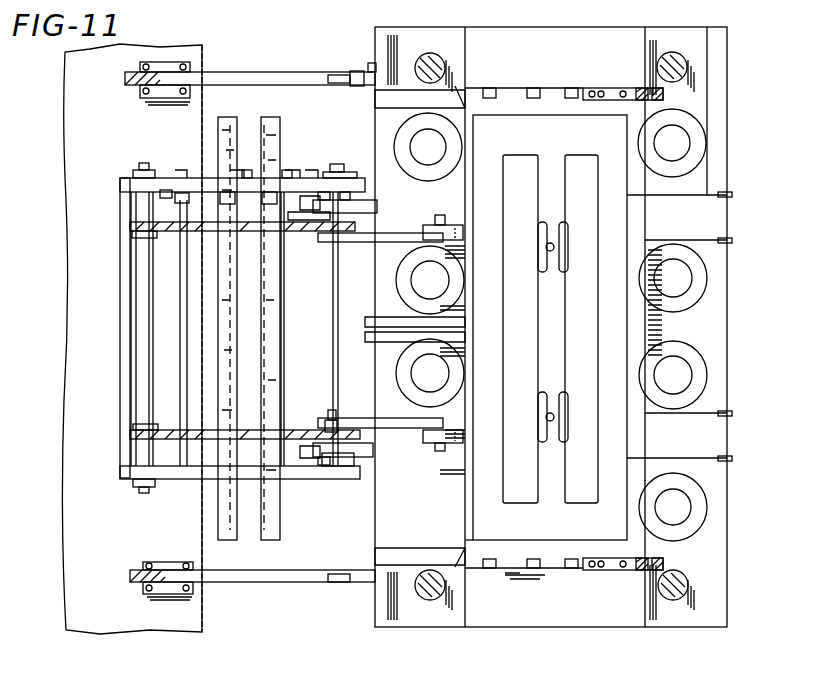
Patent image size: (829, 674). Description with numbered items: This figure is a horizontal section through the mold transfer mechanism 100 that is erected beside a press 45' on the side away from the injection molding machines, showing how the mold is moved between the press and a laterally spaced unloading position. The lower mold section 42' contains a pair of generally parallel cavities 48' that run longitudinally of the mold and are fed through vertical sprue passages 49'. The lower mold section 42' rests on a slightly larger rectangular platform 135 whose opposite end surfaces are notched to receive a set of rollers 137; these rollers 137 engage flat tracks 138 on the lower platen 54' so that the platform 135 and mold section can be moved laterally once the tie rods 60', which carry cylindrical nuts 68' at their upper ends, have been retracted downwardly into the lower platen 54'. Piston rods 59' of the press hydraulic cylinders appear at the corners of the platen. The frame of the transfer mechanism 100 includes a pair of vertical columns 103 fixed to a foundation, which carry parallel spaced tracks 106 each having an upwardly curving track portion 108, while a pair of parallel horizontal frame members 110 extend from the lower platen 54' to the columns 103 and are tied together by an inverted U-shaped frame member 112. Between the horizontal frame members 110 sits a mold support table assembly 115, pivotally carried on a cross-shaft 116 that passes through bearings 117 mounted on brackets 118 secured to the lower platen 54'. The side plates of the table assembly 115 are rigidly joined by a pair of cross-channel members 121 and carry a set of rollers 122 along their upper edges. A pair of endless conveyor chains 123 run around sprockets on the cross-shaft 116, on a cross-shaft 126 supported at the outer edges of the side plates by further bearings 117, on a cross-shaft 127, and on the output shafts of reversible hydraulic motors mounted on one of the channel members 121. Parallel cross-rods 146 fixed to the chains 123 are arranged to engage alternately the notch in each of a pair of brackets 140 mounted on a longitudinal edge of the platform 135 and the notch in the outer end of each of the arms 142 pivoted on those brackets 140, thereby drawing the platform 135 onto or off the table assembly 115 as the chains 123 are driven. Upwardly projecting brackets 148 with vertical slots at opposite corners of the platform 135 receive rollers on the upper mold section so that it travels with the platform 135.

The lower mold section 42' is at (550, 327).
The press 45' is at (585, 327).
The cavities 48' is at (550, 345).
The sprue passages 49' is at (536, 332).
The lower platen 54' is at (705, 507).
The piston rods 59' is at (588, 328).
The tie rods 60' is at (530, 261).
The cylindrical nuts 68' is at (699, 250).
The mold transfer mechanism 100 is at (266, 70).
The vertical columns 103 is at (165, 62).
The tracks 106 is at (310, 78).
The upwardly curving track portion 108 is at (197, 80).
The horizontal frame members 110 is at (188, 180).
The inverted U-shaped frame member 112 is at (345, 78).
The mold support table assembly 115 is at (118, 467).
The cross-shaft 116 is at (338, 468).
The bearings 117 is at (138, 170).
The brackets 118 is at (362, 206).
The cross-channel members 121 is at (266, 135).
The rollers 122 is at (300, 176).
The endless conveyor chains 123 is at (304, 233).
The cross-shaft 126 is at (130, 278).
The cross-shaft 127 is at (283, 366).
The platform 135 is at (472, 558).
The rollers 137 is at (568, 86).
The flat tracks 138 is at (375, 556).
The brackets 140 is at (455, 224).
The arms 142 is at (370, 240).
The cross-rods 146 is at (334, 327).
The brackets 148 is at (612, 88).